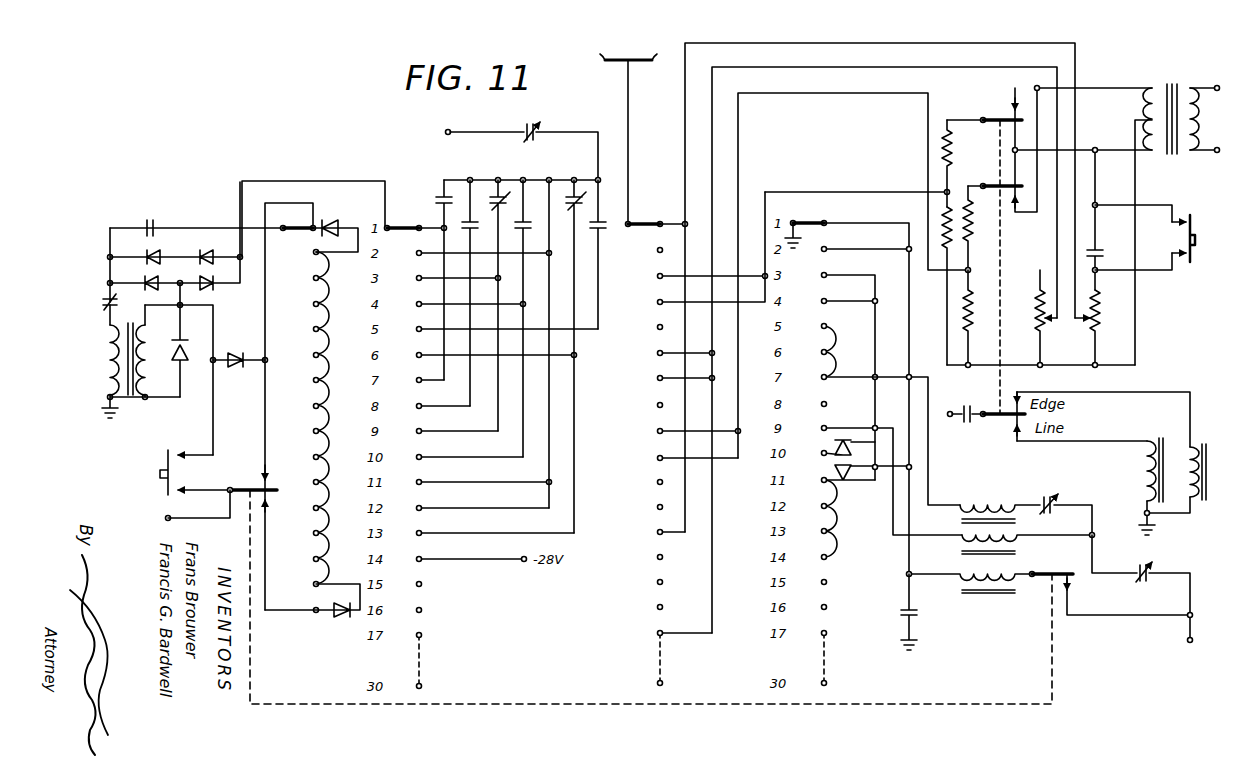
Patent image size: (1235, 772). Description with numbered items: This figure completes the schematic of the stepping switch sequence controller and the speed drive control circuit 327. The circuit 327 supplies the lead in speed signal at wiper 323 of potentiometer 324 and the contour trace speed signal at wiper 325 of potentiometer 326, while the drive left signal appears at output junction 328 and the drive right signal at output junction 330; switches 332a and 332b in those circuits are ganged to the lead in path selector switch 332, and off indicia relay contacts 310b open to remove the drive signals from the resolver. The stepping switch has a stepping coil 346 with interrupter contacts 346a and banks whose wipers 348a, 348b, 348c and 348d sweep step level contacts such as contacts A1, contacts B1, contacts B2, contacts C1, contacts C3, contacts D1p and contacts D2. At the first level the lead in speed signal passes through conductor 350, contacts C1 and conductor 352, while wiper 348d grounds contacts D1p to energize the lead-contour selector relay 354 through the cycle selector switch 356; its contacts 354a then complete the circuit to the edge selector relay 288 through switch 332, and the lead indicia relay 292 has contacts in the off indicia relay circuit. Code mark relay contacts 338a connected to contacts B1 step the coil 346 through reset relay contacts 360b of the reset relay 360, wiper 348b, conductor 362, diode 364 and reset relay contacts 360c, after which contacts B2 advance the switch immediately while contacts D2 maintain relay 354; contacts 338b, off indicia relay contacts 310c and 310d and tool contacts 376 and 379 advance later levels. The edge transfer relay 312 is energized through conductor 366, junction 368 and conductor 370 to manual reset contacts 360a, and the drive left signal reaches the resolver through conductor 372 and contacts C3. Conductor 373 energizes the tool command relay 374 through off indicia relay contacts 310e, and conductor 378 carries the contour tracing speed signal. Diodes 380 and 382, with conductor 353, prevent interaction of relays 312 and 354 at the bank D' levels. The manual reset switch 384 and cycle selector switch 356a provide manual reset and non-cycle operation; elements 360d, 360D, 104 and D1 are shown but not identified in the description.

The conductor 362 is at (298, 186).
The capacitor 360d is at (150, 212).
The reset relay contacts 360c is at (150, 255).
The diode 364 is at (221, 249).
The contact wiper 348a is at (302, 246).
The relay A contact A1 is at (318, 226).
The interrupter contacts 346a is at (102, 300).
The stepping coil 346 is at (100, 326).
The transformer winding 360 is at (150, 336).
The diode 104 is at (216, 285).
The manual reset switch 384 is at (178, 450).
The cycle selector switch 356a is at (255, 486).
The diode D1 is at (312, 600).
The step level contacts B'1 B1 is at (408, 232).
The step level contacts B'2 B2 is at (468, 253).
The code mark relay contacts 338a is at (442, 192).
The contact wiper 348b is at (436, 205).
The contacts 379 is at (462, 228).
The off indicia relay contacts 310c is at (492, 196).
The off indicia relay contacts 310d is at (516, 229).
The code mark relay contacts 338b is at (570, 196).
The variable capacitor 360D is at (538, 132).
The contacts 376 is at (601, 230).
The conductor 352 is at (630, 142).
The step level contacts C1 is at (657, 212).
The contact wiper 348c is at (644, 246).
The step level contacts C'3 C3 is at (658, 278).
The conductor 350 is at (924, 42).
The conductor 378 is at (924, 66).
The conductor 372 is at (886, 190).
The step level contacts D'1 D1p is at (847, 385).
The contact wiper 348d is at (808, 228).
The conductor 353 is at (906, 238).
The step level contacts D'2 D2 is at (822, 252).
The conductor 366 is at (882, 322).
The conductor 373 is at (836, 352).
The junction 368 is at (874, 426).
The diode 380 is at (833, 446).
The diode 382 is at (833, 470).
The output junction 328 is at (944, 194).
The output junction 330 is at (966, 274).
The switch 332a is at (1006, 114).
The switch 332b is at (1002, 182).
The speed drive control circuit 327 is at (1170, 182).
The off indicia relay contacts 310b is at (1098, 250).
The wiper 323 is at (1045, 314).
The potentiometer 324 is at (1098, 328).
The potentiometer 326 is at (1038, 312).
The wiper 325 is at (1041, 357).
The contacts 354a is at (976, 404).
The lead in path selector switch 332 is at (1000, 424).
The edge selector relay 288 is at (1111, 452).
The lead indicia relay 292 is at (1146, 476).
The tool command relay 374 is at (1012, 496).
The off indicia relay contacts 310e is at (1060, 500).
The conductor 370 is at (910, 538).
The edge transfer relay 312 is at (960, 550).
The lead-contour selector relay 354 is at (960, 586).
The reset relay contacts 360b is at (918, 612).
The cycle selector switch 356 is at (1056, 568).
The manual reset contacts 360a is at (1146, 570).